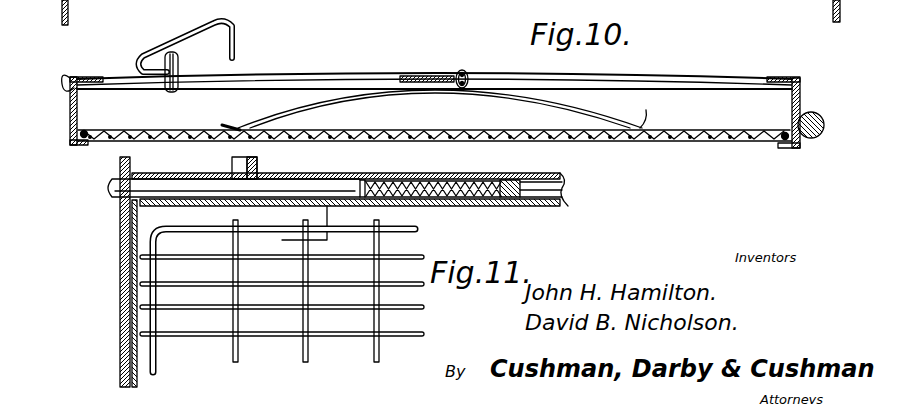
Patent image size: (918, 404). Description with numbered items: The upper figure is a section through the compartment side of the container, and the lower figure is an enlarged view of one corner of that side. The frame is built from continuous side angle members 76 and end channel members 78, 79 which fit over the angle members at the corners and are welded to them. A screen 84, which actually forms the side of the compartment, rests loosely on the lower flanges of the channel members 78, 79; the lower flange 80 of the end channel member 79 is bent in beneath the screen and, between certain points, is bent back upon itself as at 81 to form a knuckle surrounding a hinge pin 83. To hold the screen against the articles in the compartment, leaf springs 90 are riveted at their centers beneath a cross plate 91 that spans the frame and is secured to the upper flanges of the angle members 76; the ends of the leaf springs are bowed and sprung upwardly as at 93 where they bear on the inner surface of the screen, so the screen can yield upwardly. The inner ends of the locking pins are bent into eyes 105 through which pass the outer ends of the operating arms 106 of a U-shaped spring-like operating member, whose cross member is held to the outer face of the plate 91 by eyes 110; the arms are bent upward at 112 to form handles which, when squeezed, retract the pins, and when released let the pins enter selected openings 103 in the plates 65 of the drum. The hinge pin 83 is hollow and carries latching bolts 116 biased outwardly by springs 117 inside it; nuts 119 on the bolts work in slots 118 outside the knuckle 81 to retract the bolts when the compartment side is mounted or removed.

In FIG. 11, the plate 65 is at (118, 298).
In FIG. 10, the side angle member 76 is at (262, 92).
In FIG. 10, the end channel member 78 is at (75, 71).
In FIG. 10, the end channel member 79 is at (802, 95).
In FIG. 10, the lower flange 80 is at (783, 146).
In FIG. 11, the lower flange 80 is at (300, 234).
In FIG. 10, the knuckle 81 is at (812, 141).
In FIG. 11, the knuckle 81 is at (420, 178).
In FIG. 11, the hinge pin 83 is at (325, 178).
In FIG. 10, the screen 84 is at (478, 130).
In FIG. 11, the screen 84 is at (312, 324).
In FIG. 10, the leaf spring 90 is at (540, 96).
In FIG. 10, the cross plate 91 is at (412, 75).
In FIG. 10, the bowed end of leaf spring 93 is at (250, 126).
In FIG. 10, the opening 103 is at (811, 11).
In FIG. 10, the eye 105 is at (168, 92).
In FIG. 10, the operating arm 106 is at (330, 74).
In FIG. 10, the eye 110 is at (470, 72).
In FIG. 10, the handle 112 is at (205, 22).
In FIG. 11, the latching bolt 116 is at (170, 192).
In FIG. 11, the spring 117 is at (448, 178).
In FIG. 11, the slot 118 is at (285, 186).
In FIG. 11, the nut 119 is at (258, 172).